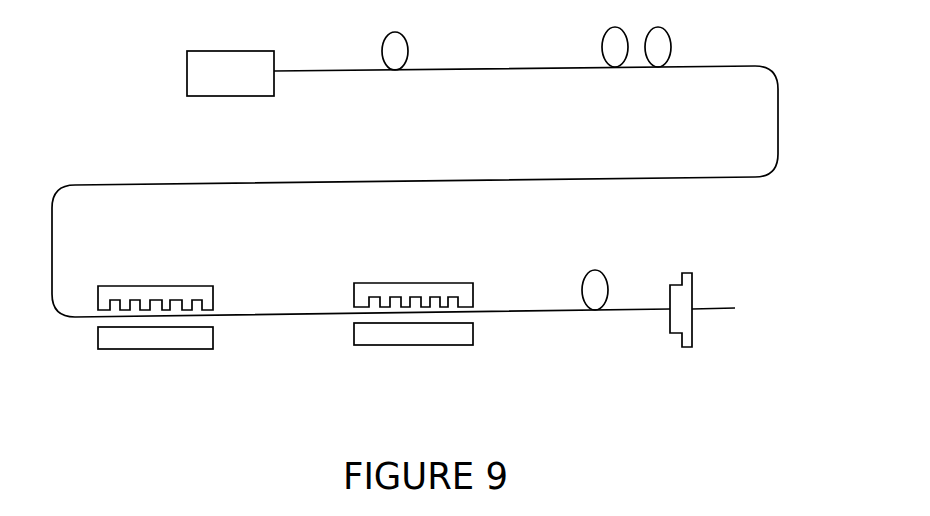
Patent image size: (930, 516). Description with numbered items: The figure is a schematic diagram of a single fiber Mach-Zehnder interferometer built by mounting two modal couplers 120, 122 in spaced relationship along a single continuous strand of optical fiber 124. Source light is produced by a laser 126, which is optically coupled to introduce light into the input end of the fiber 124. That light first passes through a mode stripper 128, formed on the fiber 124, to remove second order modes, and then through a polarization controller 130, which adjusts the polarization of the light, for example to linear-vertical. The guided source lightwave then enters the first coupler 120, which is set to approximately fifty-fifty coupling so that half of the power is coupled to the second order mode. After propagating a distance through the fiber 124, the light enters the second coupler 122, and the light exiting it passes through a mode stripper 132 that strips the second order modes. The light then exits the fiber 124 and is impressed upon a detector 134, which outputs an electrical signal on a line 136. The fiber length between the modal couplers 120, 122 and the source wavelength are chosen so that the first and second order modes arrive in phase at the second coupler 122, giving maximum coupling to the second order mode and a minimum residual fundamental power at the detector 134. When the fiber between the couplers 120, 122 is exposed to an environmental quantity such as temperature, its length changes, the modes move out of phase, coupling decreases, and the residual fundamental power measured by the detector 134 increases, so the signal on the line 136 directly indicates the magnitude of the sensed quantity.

The modal coupler 120 is at (184, 286).
The modal coupler 122 is at (438, 283).
The optical fiber 124 is at (465, 181).
The laser 126 is at (234, 51).
The mode stripper 128 is at (395, 33).
The polarization controller 130 is at (662, 28).
The mode stripper 132 is at (590, 272).
The detector 134 is at (693, 332).
The line 136 is at (715, 313).